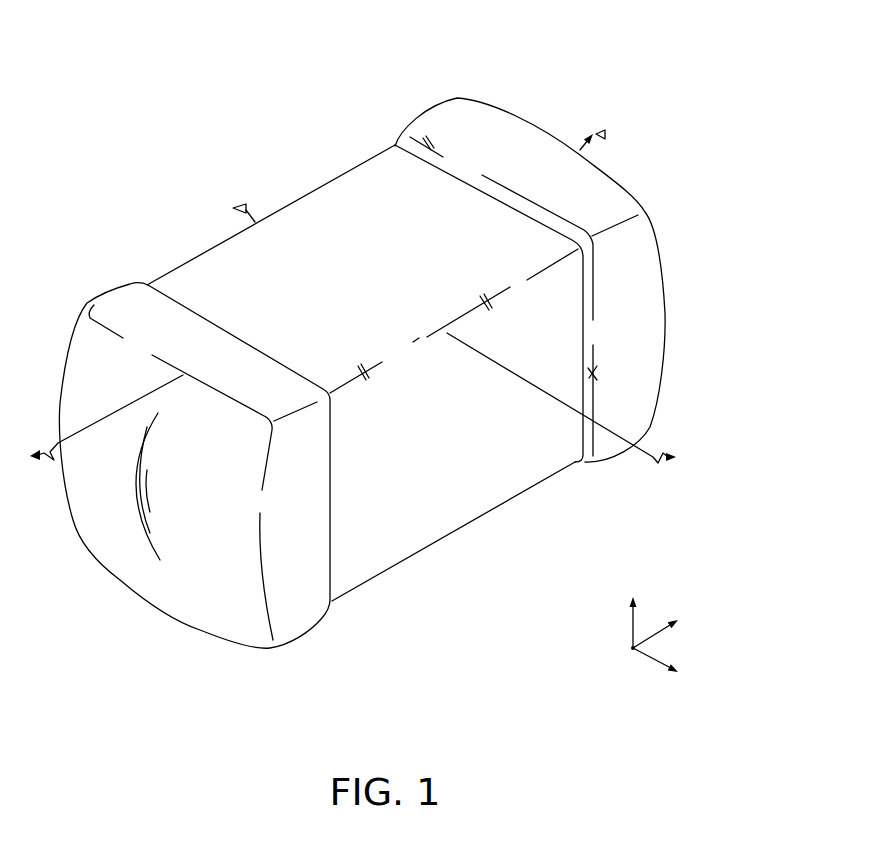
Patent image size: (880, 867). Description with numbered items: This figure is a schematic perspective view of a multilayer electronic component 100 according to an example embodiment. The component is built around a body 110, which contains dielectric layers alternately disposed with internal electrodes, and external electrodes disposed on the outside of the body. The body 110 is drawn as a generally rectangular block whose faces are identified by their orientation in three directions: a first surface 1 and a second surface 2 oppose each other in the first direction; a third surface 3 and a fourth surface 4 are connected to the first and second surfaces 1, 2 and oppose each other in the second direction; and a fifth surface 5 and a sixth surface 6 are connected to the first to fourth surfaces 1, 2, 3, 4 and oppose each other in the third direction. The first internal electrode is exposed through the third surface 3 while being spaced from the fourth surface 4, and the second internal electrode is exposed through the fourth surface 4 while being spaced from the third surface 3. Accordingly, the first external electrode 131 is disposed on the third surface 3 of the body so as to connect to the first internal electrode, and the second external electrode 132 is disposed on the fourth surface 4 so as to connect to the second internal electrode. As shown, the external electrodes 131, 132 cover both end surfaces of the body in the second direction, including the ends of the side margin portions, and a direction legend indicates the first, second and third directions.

The multilayer electronic component 100 is at (205, 40).
The body 110 is at (323, 193).
The first surface 1 is at (430, 552).
The second surface 2 is at (372, 176).
The third surface 3 is at (103, 540).
The fourth surface 4 is at (520, 118).
The fifth surface 5 is at (198, 252).
The sixth surface 6 is at (508, 482).
The first external electrode 131 is at (115, 297).
The second external electrode 132 is at (437, 112).